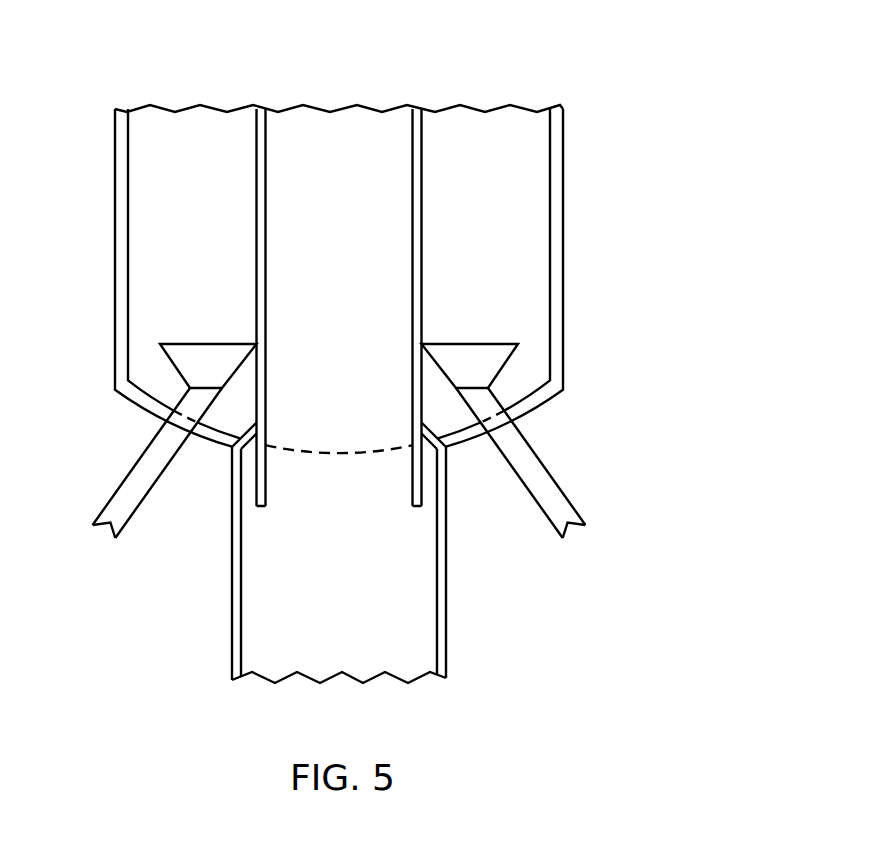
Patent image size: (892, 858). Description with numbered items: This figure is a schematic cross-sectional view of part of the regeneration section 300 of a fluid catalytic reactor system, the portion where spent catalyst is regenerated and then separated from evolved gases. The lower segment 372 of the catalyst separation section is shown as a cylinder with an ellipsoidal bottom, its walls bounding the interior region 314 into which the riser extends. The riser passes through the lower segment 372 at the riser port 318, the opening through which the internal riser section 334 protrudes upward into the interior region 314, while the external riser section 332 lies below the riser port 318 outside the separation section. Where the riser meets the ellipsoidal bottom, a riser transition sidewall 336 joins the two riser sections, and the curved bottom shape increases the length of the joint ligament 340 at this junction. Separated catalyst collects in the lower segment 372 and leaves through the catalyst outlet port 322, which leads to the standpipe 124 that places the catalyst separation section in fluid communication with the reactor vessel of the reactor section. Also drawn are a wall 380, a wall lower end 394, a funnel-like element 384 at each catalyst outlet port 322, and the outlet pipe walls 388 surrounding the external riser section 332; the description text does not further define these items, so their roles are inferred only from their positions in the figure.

The regeneration section 300 is at (406, 84).
The lower segment 372 is at (115, 246).
The inner wall 380 is at (256, 171).
The inner wall lower end 394 is at (267, 494).
The interior region 314 is at (516, 242).
The internal riser section 334 is at (363, 272).
The funnel 384 is at (189, 343).
The catalyst outlet port 322 is at (182, 418).
The standpipe 124 is at (108, 503).
The joint ligament 340 is at (203, 441).
The riser transition sidewall 336 is at (242, 424).
The riser port 318 is at (350, 456).
The outlet pipe 388 is at (232, 600).
The external riser section 332 is at (363, 614).